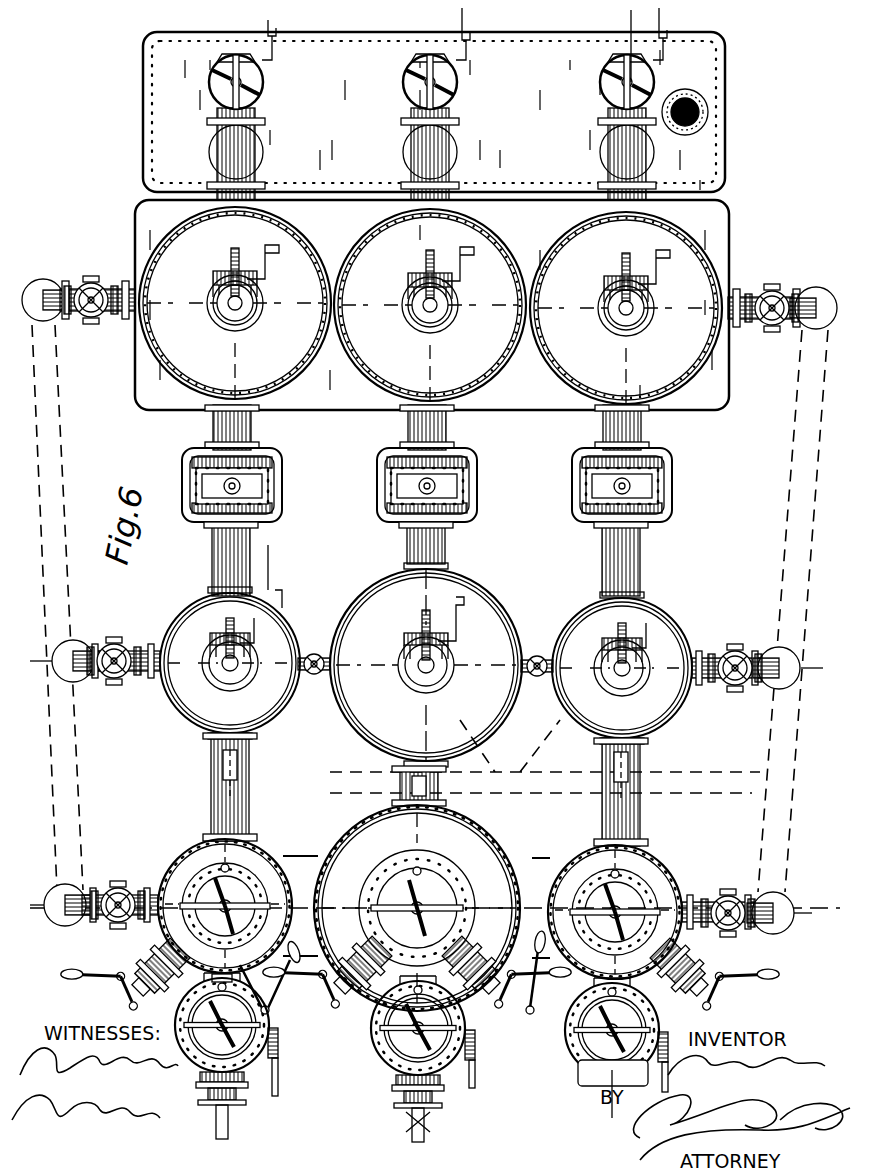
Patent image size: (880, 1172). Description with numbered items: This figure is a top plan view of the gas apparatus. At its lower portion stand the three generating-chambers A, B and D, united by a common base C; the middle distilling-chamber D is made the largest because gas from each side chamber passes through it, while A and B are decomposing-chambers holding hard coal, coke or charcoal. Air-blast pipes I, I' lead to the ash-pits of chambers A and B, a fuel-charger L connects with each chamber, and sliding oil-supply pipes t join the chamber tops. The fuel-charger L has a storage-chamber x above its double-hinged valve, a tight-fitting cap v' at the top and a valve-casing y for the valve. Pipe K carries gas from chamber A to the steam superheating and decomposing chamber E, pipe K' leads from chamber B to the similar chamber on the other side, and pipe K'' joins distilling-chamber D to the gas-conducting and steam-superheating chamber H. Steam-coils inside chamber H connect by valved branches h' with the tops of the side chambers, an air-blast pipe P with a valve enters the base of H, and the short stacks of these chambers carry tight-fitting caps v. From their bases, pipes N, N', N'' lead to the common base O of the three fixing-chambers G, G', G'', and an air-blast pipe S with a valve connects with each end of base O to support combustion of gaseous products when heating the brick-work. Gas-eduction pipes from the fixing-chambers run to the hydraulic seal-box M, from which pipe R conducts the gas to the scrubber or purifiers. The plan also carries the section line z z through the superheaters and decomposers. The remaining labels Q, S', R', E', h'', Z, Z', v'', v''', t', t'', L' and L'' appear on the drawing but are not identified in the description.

The hydraulic seal-box M is at (434, 112).
The pipe R is at (704, 112).
The storage-chamber x is at (241, 110).
The valve-casing y is at (435, 100).
The section line z is at (632, 100).
The casing box Q is at (432, 305).
The fixing-chamber G is at (235, 305).
The fixing-chamber G' is at (430, 307).
The fixing-chamber G'' is at (626, 310).
The air-blast pipe S is at (76, 284).
The elbow pipe S' is at (791, 290).
The air-blast pipe P is at (91, 285).
The valve R' is at (772, 291).
The base of fixing-chambers O is at (427, 427).
The pipe N is at (239, 498).
The pipe N' is at (434, 498).
The pipe N'' is at (630, 498).
The steam superheating and decomposing chamber E is at (230, 663).
The sphere chamber E' is at (622, 664).
The gas-conducting and steam-superheating chamber H is at (426, 665).
The branches h' is at (314, 649).
The small valve h'' is at (537, 649).
The elbow inlet Z is at (85, 651).
The elbow inlet Z' is at (767, 653).
The tight-fitting caps v is at (114, 654).
The tight-fitting cap v' is at (118, 895).
The valve v'' is at (735, 657).
The valve v''' is at (728, 903).
The pipe K is at (225, 787).
The pipe K' is at (411, 782).
The pipe K'' is at (629, 792).
The common base C is at (435, 907).
The decomposing-chamber A is at (214, 906).
The distilling-chamber D is at (417, 901).
The decomposing-chamber B is at (615, 906).
The air-blast pipe I is at (87, 917).
The air-blast pipe I' is at (755, 921).
The sliding oil-supply pipes t is at (179, 968).
The oil cup lever t' is at (417, 966).
The oil cup lever t'' is at (715, 968).
The fuel-charger L is at (232, 1056).
The lower valve chamber L' is at (424, 1059).
The lower valve chamber L'' is at (606, 1059).